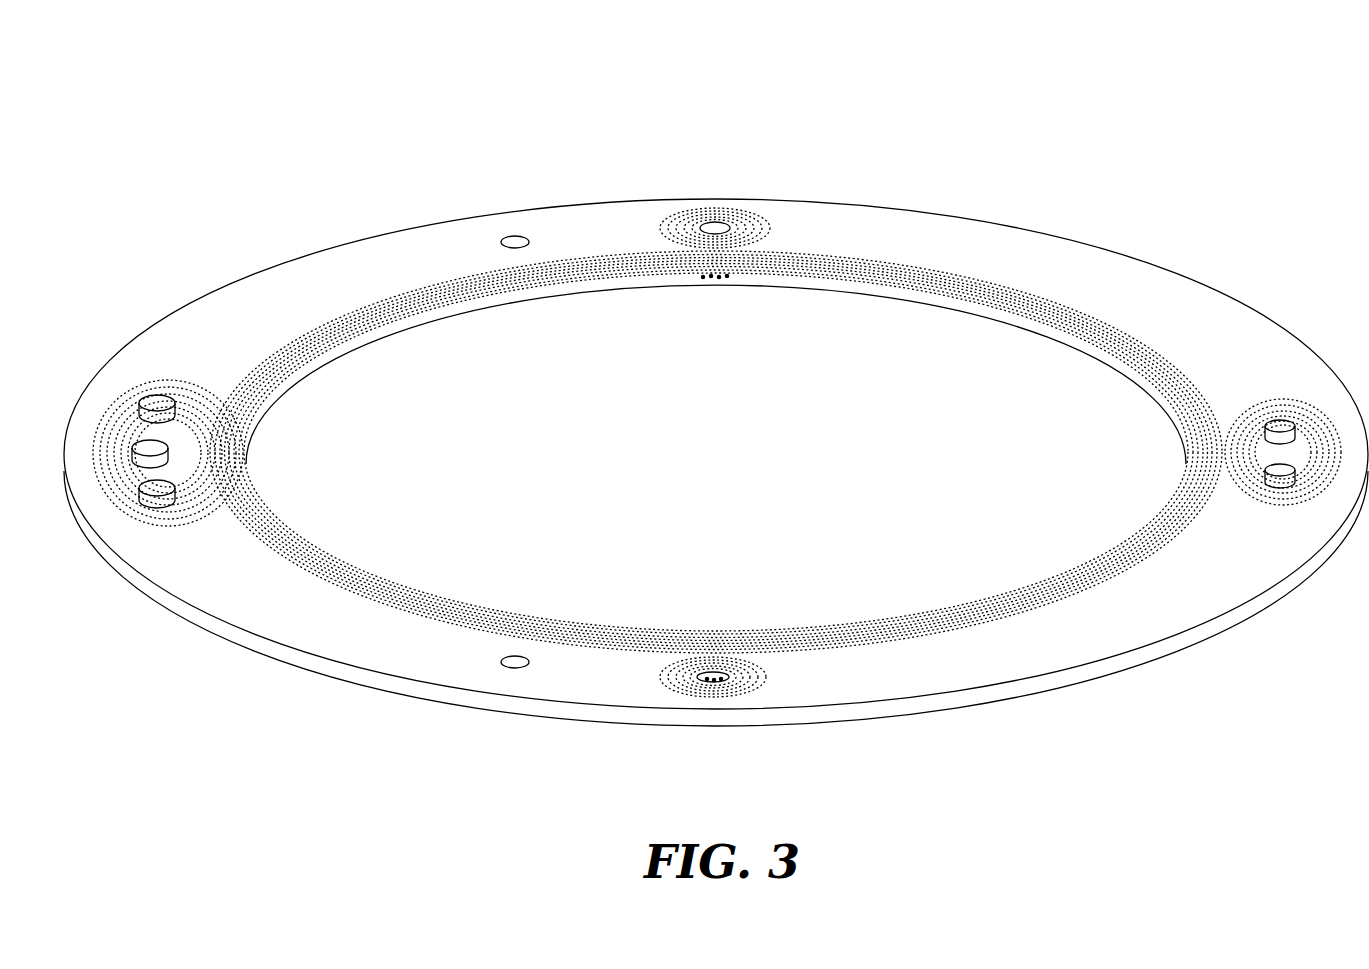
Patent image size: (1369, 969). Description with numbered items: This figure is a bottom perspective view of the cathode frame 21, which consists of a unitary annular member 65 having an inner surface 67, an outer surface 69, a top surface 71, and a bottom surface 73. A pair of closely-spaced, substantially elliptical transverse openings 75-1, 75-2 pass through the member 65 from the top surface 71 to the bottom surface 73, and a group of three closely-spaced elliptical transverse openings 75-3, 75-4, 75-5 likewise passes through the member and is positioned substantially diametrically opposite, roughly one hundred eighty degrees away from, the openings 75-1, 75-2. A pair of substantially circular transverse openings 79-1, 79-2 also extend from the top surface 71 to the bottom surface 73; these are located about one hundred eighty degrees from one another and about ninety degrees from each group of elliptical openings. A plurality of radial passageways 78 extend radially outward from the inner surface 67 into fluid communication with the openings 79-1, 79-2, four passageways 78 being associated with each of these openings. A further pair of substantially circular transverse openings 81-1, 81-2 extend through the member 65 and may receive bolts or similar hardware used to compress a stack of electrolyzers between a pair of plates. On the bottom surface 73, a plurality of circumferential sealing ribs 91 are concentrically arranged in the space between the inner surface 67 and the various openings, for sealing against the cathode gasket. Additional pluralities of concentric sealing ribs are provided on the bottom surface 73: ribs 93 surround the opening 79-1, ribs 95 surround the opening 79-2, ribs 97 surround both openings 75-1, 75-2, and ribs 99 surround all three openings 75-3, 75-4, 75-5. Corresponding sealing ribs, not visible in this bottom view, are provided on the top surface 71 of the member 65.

The cathode frame 21 is at (386, 114).
The unitary annular member 65 is at (950, 318).
The inner surface 67 is at (578, 290).
The outer surface 69 is at (328, 248).
The top surface 71 is at (272, 660).
The bottom surface 73 is at (996, 648).
The transverse opening 75-1 is at (1272, 420).
The transverse opening 75-2 is at (1265, 490).
The transverse opening 75-3 is at (165, 398).
The transverse opening 75-4 is at (137, 443).
The transverse opening 75-5 is at (160, 493).
The radial passageway 78 is at (720, 280).
The transverse opening 79-1 is at (712, 224).
The transverse opening 79-2 is at (716, 672).
The transverse opening 81-1 is at (511, 238).
The transverse opening 81-2 is at (515, 655).
The circumferential sealing ribs 91 is at (280, 537).
The concentric ribs 93 is at (762, 216).
The concentric ribs 95 is at (672, 668).
The concentric ribs 97 is at (1312, 415).
The concentric ribs 99 is at (117, 493).